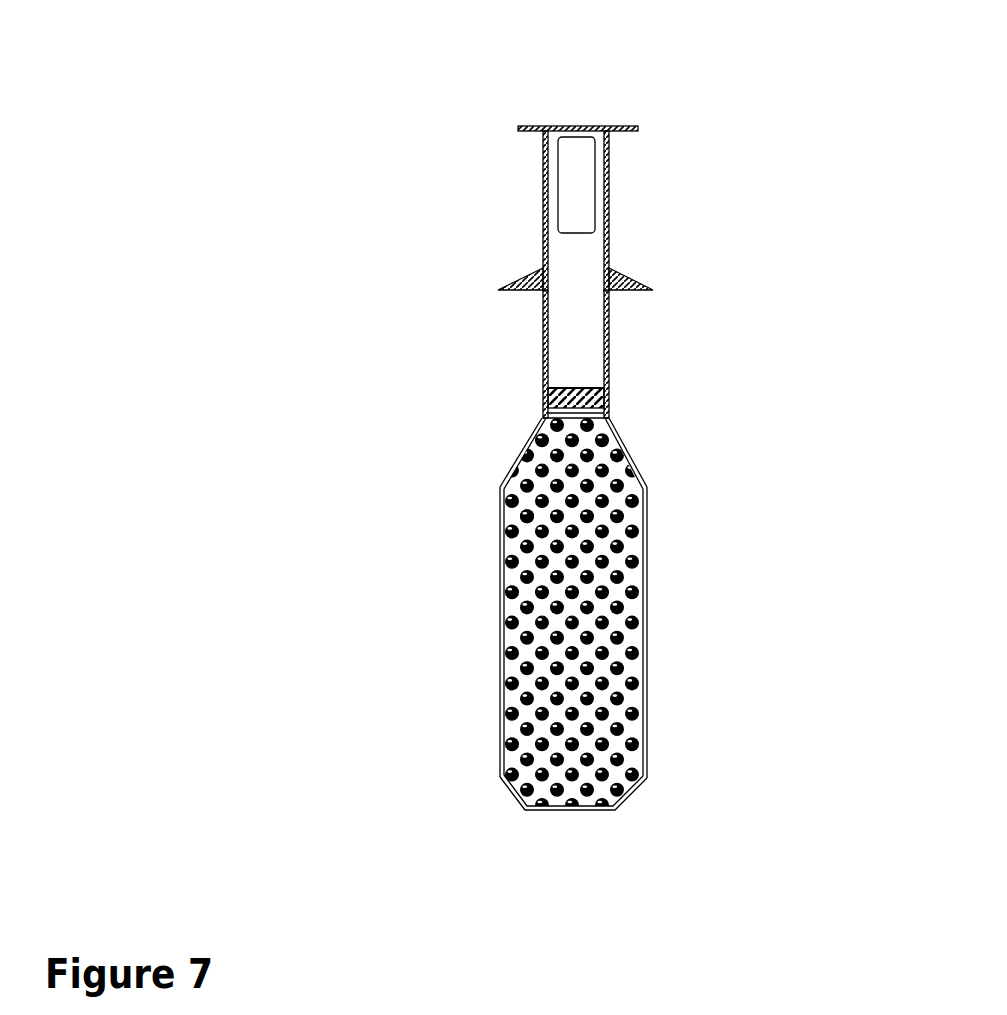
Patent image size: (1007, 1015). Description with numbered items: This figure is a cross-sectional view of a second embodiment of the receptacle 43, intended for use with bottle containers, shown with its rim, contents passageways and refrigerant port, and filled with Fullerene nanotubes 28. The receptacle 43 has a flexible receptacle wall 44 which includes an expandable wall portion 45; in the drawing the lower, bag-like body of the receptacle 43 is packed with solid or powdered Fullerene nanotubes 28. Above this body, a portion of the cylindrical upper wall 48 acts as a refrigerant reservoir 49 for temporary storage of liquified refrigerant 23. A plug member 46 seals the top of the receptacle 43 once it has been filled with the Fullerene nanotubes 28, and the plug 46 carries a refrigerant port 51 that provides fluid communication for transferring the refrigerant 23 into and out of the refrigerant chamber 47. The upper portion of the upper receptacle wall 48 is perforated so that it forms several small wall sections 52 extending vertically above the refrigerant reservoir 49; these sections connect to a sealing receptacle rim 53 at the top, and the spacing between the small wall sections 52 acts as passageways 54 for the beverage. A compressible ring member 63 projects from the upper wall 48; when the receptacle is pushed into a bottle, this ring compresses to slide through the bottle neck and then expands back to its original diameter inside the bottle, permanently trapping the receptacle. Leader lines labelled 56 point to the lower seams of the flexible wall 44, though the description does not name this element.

The receptacle 43 is at (621, 227).
The sealing receptacle rim 53 is at (522, 126).
The small wall sections 52 is at (557, 190).
The passageways 54 is at (577, 213).
The compressible ring member 63 is at (622, 272).
The cylindrical upper wall 48 is at (608, 360).
The refrigerant reservoir 49 is at (585, 343).
The plug member 46 is at (548, 392).
The refrigerant port 51 is at (573, 388).
The refrigerant chamber 47 is at (557, 413).
The flexible receptacle wall 44 is at (630, 455).
The expandable wall portion 45 is at (648, 658).
The bag bottom seams 56 is at (585, 809).
The liquified refrigerant 23 is at (533, 622).
The Fullerene nanotubes 28 is at (522, 520).